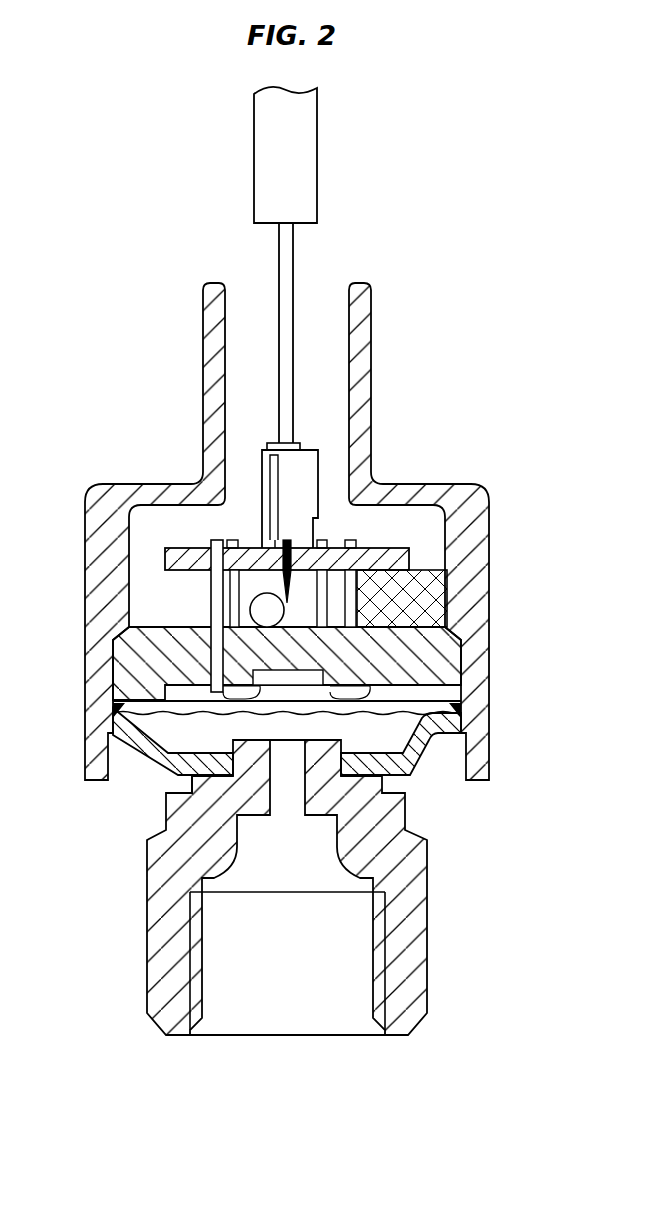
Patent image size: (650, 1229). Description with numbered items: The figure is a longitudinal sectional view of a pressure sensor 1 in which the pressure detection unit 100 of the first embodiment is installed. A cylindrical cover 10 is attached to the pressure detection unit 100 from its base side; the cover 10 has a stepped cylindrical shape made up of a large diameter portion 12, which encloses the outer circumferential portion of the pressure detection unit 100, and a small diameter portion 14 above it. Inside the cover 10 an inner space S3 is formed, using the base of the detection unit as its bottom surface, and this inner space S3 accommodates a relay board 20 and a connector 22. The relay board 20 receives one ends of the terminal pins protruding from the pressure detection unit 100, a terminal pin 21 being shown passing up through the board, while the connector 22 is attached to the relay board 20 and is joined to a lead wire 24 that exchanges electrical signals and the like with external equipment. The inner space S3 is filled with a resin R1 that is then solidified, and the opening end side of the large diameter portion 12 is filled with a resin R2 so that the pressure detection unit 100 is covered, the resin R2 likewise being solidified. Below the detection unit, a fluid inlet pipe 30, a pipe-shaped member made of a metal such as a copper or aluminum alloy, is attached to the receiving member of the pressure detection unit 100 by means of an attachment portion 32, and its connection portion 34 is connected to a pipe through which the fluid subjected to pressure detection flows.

The pressure sensor 1 is at (445, 298).
The cylindrical cover 10 is at (489, 540).
The large diameter portion 12 is at (85, 598).
The small diameter portion 14 is at (215, 342).
The resin R1 is at (248, 302).
The lead wire 24 is at (290, 244).
The inner space S3 is at (417, 518).
The connector 22 is at (270, 462).
The relay board 20 is at (370, 555).
The terminal pin 21 is at (211, 546).
The resin R2 is at (123, 765).
The pressure detection unit 100 is at (430, 754).
The fluid inlet pipe 30 is at (420, 930).
The attachment portion 32 is at (175, 778).
The connection portion 34 is at (371, 972).